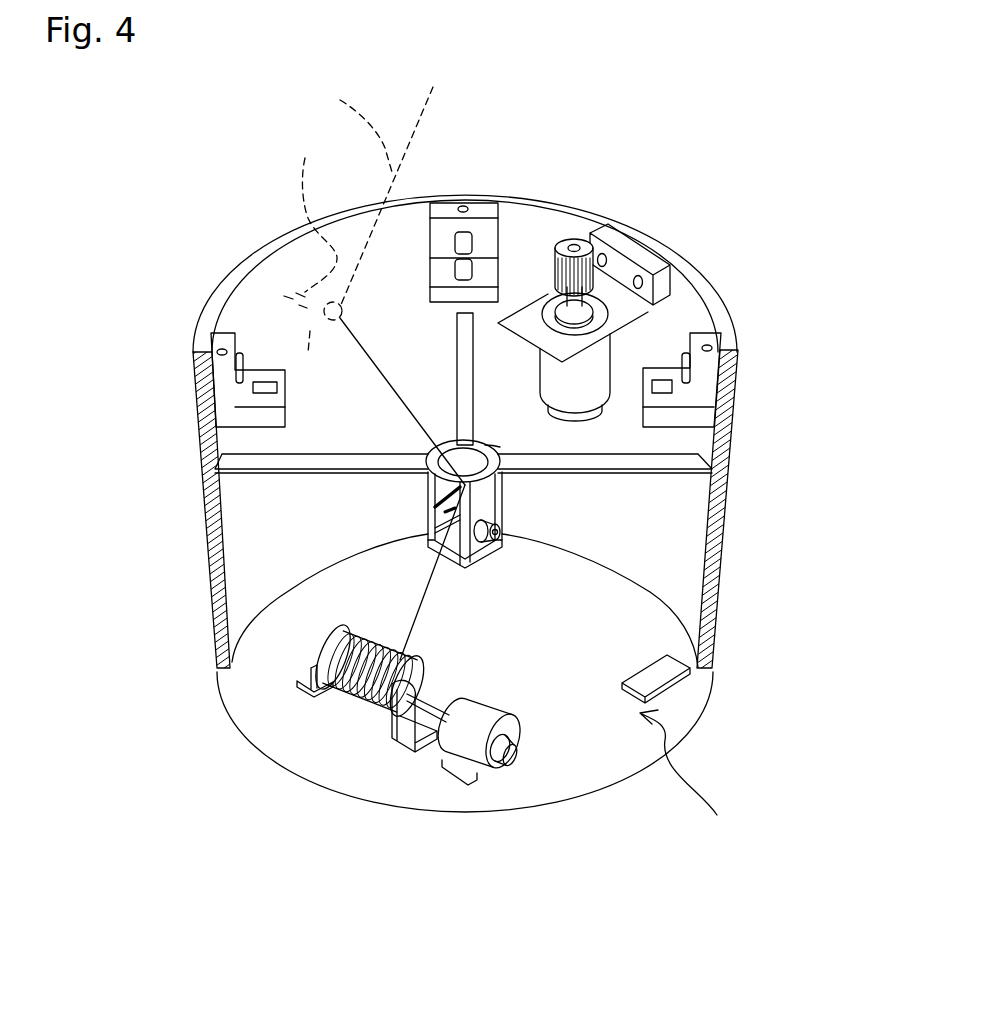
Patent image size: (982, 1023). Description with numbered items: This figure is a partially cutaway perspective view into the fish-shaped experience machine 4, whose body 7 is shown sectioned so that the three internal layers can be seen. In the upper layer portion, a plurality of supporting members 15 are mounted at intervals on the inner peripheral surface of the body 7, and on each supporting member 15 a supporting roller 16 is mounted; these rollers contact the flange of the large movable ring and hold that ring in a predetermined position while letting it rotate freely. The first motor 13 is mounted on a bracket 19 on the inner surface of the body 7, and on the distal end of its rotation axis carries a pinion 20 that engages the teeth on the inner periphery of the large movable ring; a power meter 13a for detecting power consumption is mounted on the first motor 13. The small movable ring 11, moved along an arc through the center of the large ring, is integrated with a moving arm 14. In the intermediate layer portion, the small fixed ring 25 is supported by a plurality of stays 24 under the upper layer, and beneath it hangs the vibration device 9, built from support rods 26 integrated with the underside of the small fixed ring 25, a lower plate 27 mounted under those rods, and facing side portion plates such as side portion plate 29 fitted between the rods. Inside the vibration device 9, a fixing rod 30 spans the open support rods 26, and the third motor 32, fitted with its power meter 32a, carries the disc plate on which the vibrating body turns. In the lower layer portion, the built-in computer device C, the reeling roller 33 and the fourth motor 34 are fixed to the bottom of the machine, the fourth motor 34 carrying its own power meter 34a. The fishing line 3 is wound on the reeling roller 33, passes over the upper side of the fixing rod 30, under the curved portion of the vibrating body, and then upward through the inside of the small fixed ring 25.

The fishing line 3 is at (376, 195).
The moving arm 14 is at (310, 241).
The small movable ring 11 is at (392, 393).
The supporting member 15 is at (492, 210).
The supporting roller 16 is at (473, 268).
The pinion 20 is at (603, 240).
The bracket 19 is at (633, 277).
The stay 24 is at (457, 343).
The small fixed ring 25 is at (427, 467).
The power meter 32a is at (498, 445).
The first motor 13 is at (583, 427).
The power meter 13a is at (578, 400).
The vibration device 9 is at (448, 577).
The support rod 26 is at (430, 537).
The fixing rod 30 is at (428, 540).
The lower plate 27 is at (448, 562).
The side portion plate 29 is at (488, 513).
The third motor 32 is at (476, 566).
The reeling roller 33 is at (313, 653).
The fourth motor 34 is at (463, 752).
The power meter 34a is at (507, 757).
The built-in computer device C is at (690, 682).
The fish-shaped experience machine 4 is at (688, 772).
The body 7 is at (728, 525).